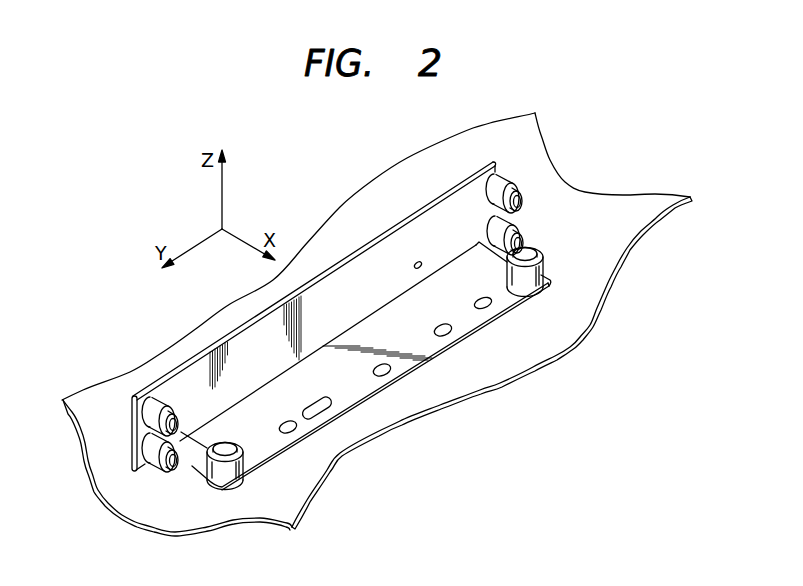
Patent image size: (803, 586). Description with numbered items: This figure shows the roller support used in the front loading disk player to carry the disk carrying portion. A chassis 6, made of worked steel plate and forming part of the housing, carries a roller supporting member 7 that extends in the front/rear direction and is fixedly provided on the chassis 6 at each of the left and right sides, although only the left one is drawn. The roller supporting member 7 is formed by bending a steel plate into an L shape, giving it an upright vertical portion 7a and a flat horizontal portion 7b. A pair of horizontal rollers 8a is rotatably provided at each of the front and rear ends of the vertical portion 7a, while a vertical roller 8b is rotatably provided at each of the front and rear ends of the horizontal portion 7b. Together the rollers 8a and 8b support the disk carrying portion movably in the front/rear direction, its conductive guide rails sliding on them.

The chassis 6 is at (566, 340).
The roller supporting member 7 is at (341, 324).
The vertical portion 7a is at (378, 252).
The horizontal portion 7b is at (444, 350).
The horizontal rollers 8a is at (508, 178).
The vertical roller 8b is at (237, 446).